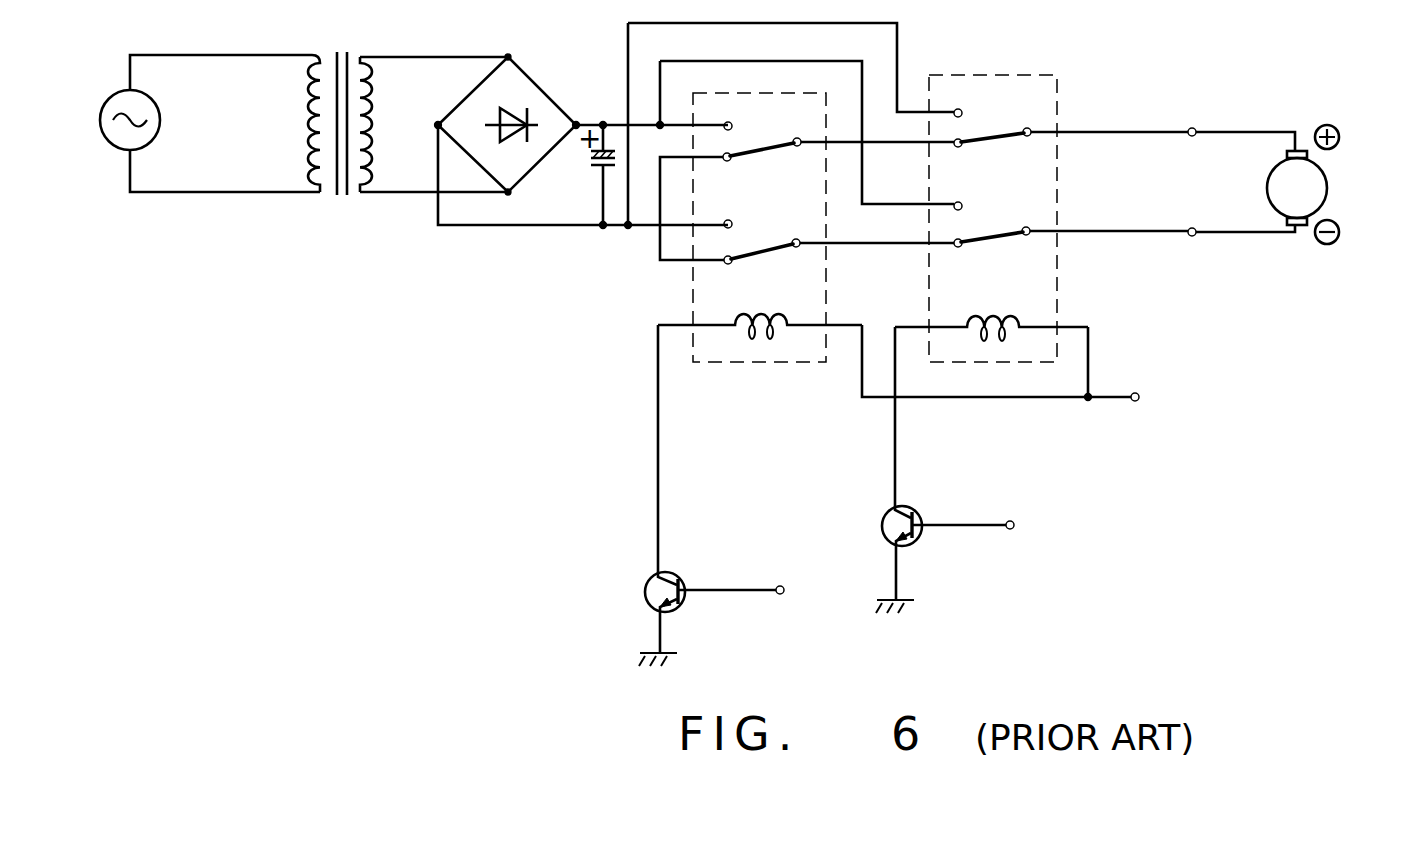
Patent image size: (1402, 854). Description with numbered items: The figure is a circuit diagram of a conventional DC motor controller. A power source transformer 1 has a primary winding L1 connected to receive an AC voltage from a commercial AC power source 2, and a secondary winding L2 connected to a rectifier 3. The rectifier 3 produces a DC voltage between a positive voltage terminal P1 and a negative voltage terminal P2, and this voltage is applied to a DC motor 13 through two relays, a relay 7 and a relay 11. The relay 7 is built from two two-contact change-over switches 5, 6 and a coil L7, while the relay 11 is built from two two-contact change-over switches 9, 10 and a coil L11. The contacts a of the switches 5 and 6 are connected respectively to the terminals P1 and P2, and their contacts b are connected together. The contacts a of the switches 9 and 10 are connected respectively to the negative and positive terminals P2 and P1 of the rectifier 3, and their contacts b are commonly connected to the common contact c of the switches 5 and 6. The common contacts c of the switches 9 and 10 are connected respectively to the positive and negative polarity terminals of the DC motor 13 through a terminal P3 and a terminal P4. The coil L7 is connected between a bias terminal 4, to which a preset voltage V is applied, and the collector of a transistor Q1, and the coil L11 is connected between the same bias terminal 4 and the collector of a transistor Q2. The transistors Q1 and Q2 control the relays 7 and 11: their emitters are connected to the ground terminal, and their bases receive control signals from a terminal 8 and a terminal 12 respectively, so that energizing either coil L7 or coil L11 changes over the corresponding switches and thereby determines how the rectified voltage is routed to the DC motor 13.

The power source transformer 1 is at (374, 158).
The commercial AC power source 2 is at (159, 108).
The rectifier 3 is at (545, 93).
The bias terminal 4 is at (1135, 402).
The two-contact change-over switch 5 is at (768, 136).
The two-contact change-over switch 6 is at (763, 243).
The relay 7 is at (787, 211).
The terminal 8 is at (785, 584).
The two-contact change-over switch 9 is at (995, 126).
The two-contact change-over switch 10 is at (994, 233).
The relay 11 is at (1016, 202).
The terminal 12 is at (1017, 520).
The DC motor 13 is at (1326, 200).
The primary winding L1 is at (304, 122).
The secondary winding L2 is at (378, 88).
The positive voltage terminal P1 is at (575, 131).
The negative voltage terminal P2 is at (436, 128).
The coil L7 is at (692, 295).
The coil L11 is at (1058, 283).
The terminal P3 is at (1192, 128).
The terminal P4 is at (1193, 237).
The transistor Q1 is at (681, 607).
The transistor Q2 is at (917, 542).